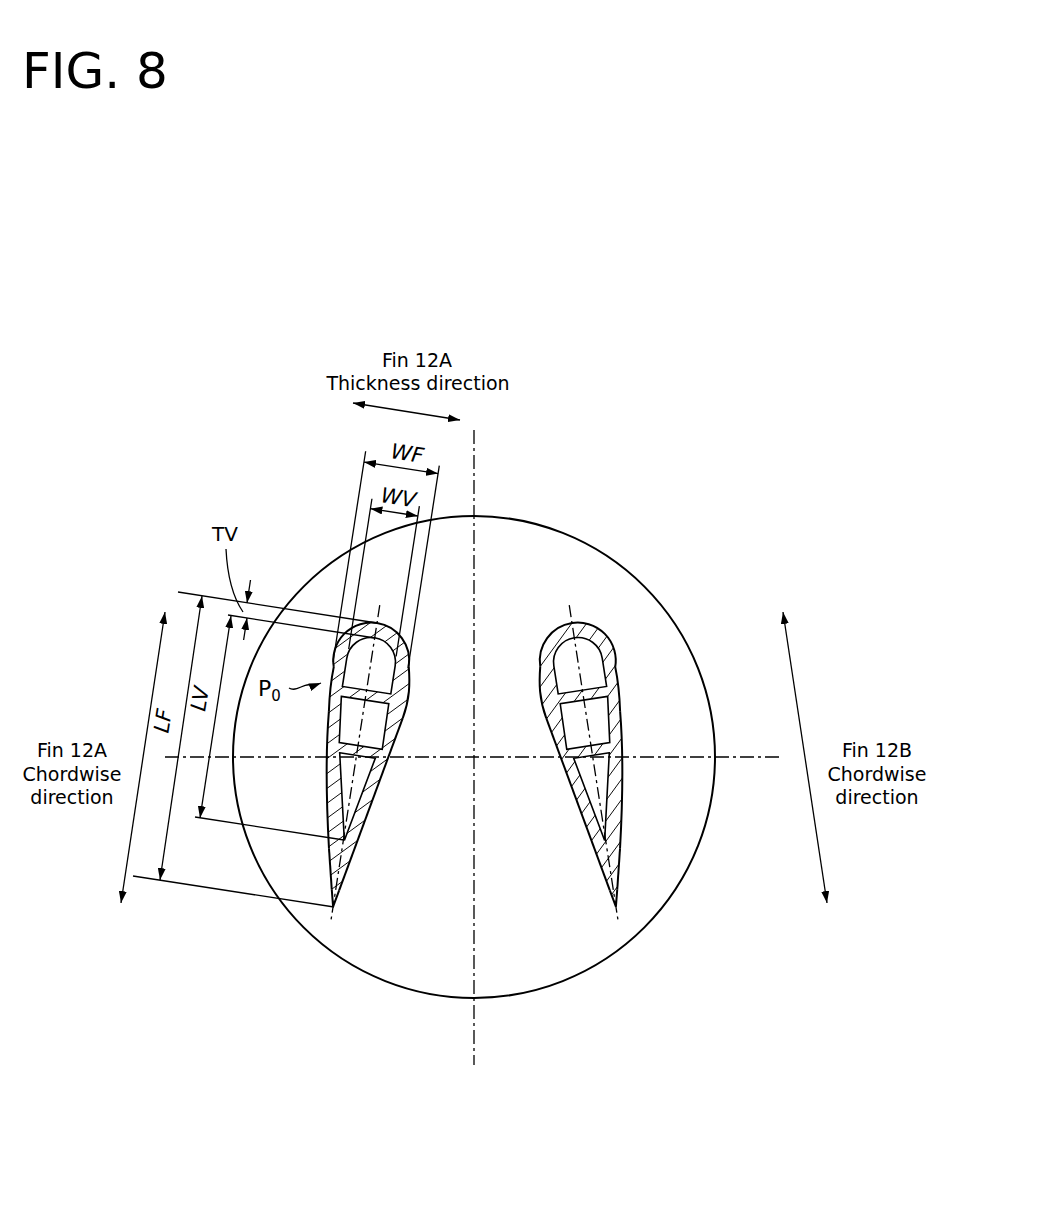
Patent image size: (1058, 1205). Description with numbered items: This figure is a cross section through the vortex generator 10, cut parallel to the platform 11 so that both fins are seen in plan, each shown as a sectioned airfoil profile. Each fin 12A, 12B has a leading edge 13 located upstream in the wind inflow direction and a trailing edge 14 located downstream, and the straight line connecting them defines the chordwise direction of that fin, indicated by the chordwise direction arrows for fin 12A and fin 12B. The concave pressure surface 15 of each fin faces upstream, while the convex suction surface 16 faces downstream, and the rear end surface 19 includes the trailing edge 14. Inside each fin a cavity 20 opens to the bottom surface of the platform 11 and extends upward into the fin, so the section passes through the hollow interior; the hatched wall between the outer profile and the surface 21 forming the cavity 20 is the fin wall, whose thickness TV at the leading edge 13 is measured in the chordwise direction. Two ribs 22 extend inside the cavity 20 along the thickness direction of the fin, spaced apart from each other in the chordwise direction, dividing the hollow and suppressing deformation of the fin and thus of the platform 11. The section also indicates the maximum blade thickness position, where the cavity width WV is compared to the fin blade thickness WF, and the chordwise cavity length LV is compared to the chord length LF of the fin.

The vortex generator 10 is at (685, 522).
The platform 11 is at (518, 553).
The fin 12A is at (398, 688).
The fin 12B is at (601, 647).
The leading edge 13 is at (377, 620).
The trailing edge 14 is at (337, 913).
The pressure surface 15 is at (325, 889).
The suction surface 16 is at (337, 886).
The rear end surface 19 is at (333, 906).
The cavity 20 is at (373, 717).
The surface forming the cavity 21 is at (362, 785).
The rib 22 is at (588, 700).